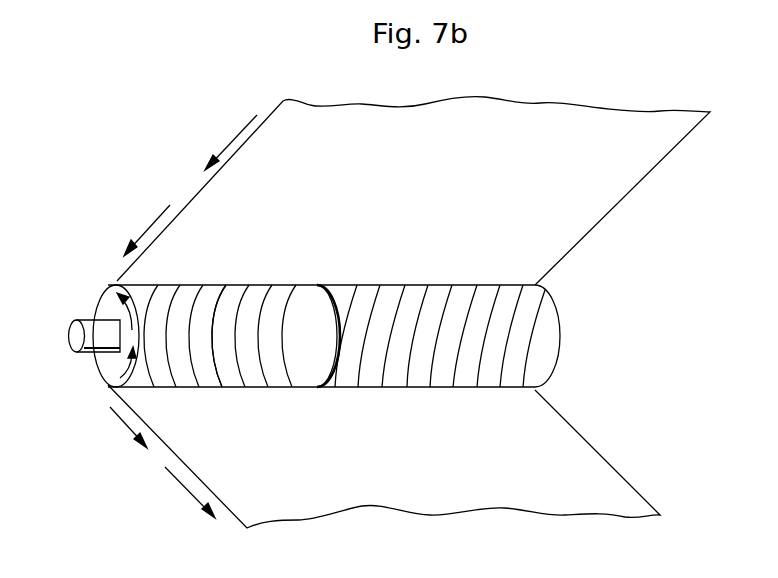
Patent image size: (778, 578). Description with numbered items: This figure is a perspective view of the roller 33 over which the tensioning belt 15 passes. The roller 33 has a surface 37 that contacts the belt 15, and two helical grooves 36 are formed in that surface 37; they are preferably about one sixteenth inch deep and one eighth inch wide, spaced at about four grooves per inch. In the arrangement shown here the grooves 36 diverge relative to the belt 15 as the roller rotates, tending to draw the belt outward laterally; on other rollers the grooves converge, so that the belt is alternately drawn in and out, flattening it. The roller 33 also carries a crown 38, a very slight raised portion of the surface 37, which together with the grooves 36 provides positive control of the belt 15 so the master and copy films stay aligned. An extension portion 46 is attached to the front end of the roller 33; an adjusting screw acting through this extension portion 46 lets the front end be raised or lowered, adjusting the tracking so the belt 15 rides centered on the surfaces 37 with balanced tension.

The tensioning belt 15 is at (392, 176).
The roller 33 is at (481, 308).
The helical grooves 36 is at (222, 348).
The surface 37 is at (268, 306).
The crown 38 is at (317, 285).
The extension portion 46 is at (82, 355).